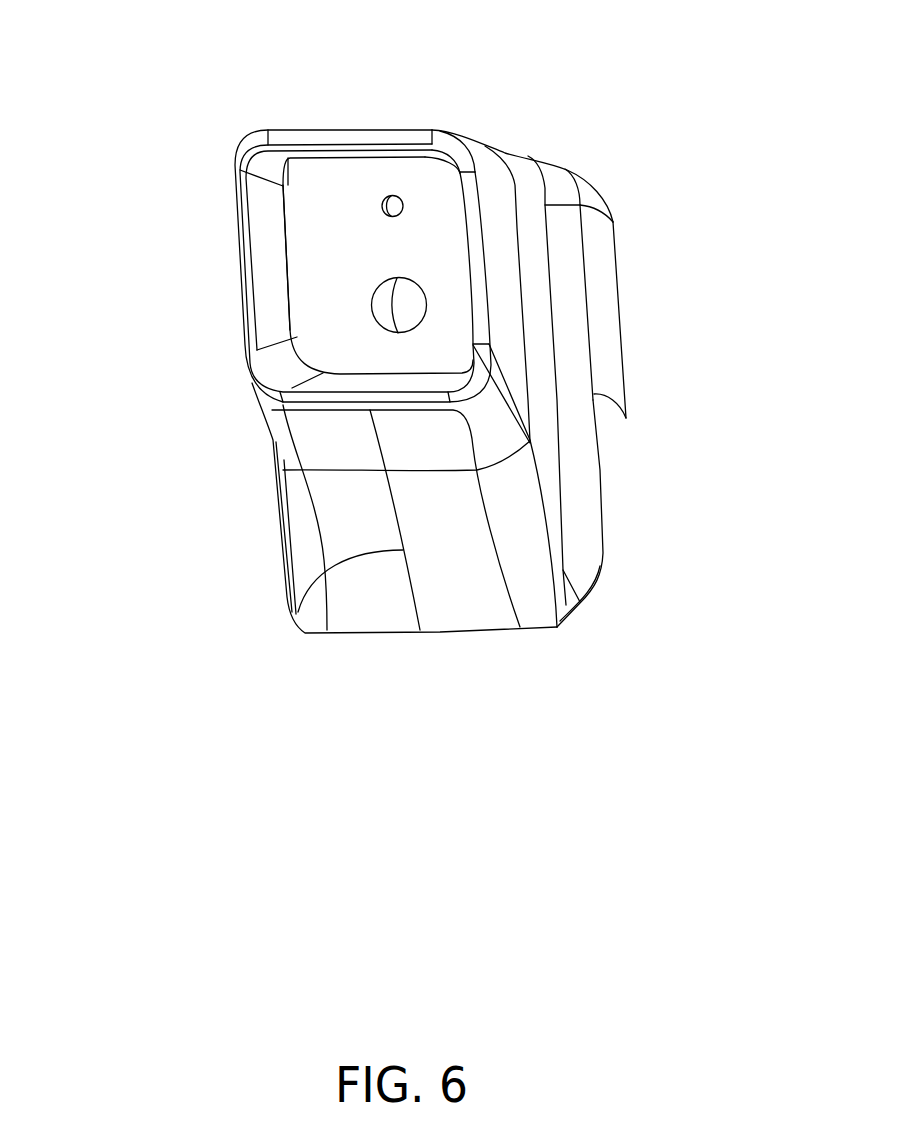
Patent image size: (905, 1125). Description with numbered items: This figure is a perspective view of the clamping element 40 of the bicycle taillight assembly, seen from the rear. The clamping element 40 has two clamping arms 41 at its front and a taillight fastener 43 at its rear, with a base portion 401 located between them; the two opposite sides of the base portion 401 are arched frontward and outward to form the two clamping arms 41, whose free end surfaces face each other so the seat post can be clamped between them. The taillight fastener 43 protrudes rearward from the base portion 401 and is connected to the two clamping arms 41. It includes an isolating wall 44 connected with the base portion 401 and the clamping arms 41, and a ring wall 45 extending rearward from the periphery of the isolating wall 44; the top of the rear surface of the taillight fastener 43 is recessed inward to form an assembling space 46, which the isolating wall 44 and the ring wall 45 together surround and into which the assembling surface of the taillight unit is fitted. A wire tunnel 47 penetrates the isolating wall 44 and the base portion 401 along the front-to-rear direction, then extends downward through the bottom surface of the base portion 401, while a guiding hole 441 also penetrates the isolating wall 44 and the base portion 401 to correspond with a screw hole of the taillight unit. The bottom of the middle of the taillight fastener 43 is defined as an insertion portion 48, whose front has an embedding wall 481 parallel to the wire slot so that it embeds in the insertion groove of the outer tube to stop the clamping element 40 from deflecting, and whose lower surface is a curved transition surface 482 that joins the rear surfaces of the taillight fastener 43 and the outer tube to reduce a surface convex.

The clamping element 40 is at (558, 178).
The base portion 401 is at (521, 176).
The clamping arms 41 is at (608, 269).
The taillight fastener 43 is at (230, 372).
The isolating wall 44 is at (330, 205).
The guiding hole 441 is at (399, 193).
The ring wall 45 is at (253, 232).
The assembling space 46 is at (330, 277).
The wire tunnel 47 is at (410, 305).
The insertion portion 48 is at (577, 603).
The embedding wall 481 is at (601, 497).
The curved transition surface 482 is at (297, 633).